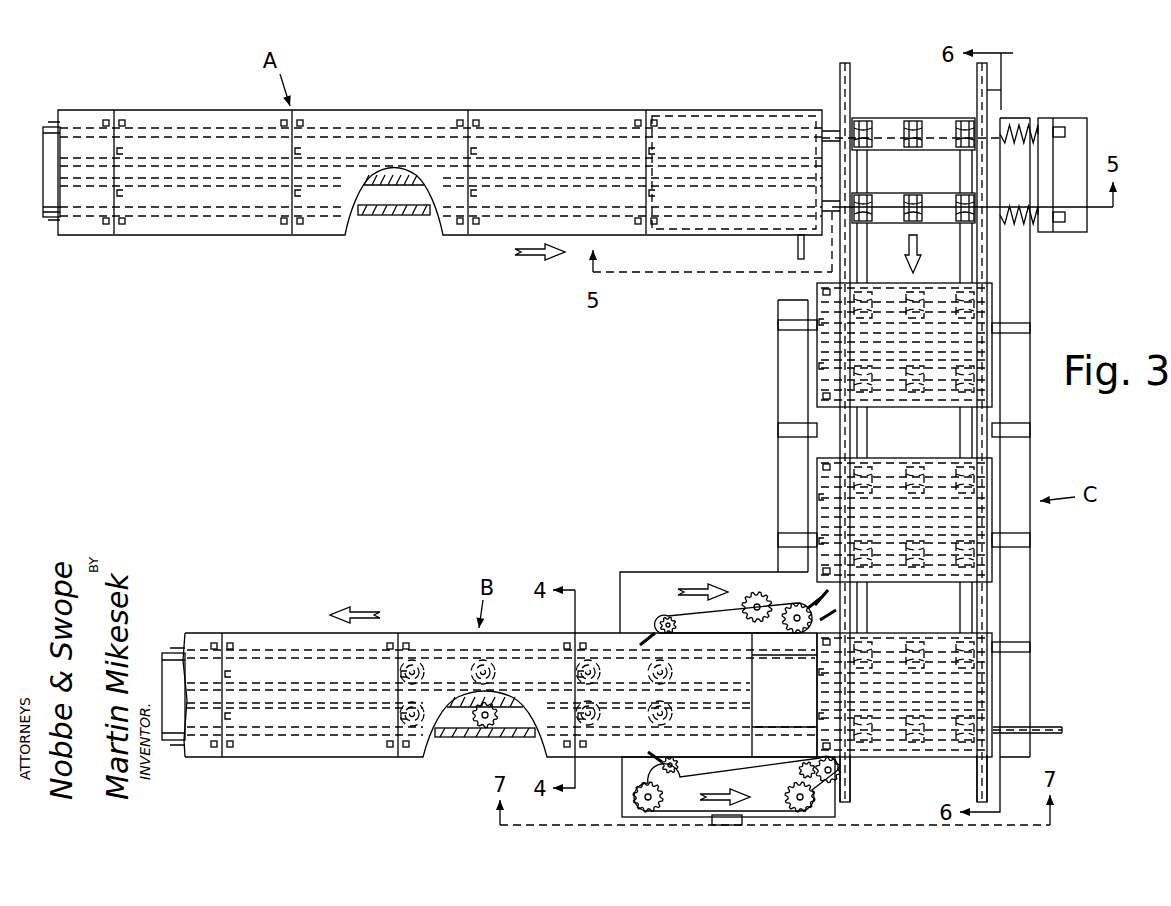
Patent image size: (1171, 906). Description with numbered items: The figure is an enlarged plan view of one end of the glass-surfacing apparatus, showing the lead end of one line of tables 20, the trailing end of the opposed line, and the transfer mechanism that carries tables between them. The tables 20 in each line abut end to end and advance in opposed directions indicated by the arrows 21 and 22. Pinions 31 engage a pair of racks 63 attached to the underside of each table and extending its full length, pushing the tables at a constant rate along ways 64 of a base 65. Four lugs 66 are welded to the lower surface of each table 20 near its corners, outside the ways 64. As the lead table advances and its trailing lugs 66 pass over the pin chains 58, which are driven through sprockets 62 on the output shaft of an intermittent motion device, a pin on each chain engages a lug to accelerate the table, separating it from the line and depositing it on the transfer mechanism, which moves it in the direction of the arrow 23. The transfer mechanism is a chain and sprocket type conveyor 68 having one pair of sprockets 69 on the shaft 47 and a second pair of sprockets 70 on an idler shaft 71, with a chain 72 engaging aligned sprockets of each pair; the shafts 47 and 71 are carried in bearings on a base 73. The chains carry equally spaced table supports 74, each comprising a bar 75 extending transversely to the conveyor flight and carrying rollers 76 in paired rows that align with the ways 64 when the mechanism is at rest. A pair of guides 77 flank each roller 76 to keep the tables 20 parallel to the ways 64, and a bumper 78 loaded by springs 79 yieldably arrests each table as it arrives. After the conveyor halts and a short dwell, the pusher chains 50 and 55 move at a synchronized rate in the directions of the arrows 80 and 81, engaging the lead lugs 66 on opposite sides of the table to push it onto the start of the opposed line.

The table 20 is at (196, 238).
The arrow 21 is at (548, 258).
The arrow 22 is at (352, 610).
The arrow 23 is at (930, 254).
The pinion 31 is at (478, 728).
The shaft 47 is at (1043, 724).
The pusher chain 50 is at (740, 598).
The pusher chain 55 is at (655, 760).
The pin chain 58 is at (745, 108).
The sprocket 62 is at (798, 242).
The rack 63 is at (410, 160).
The way 64 is at (57, 124).
The base 65 is at (55, 175).
The lug 66 is at (300, 226).
The chain and sprocket type conveyor 68 is at (992, 90).
The sprocket 69 is at (851, 785).
The sprocket 70 is at (840, 66).
The idler shaft 71 is at (838, 130).
The chain 72 is at (985, 418).
The base 73 is at (1031, 528).
The table support 74 is at (877, 116).
The bar 75 is at (945, 124).
The roller 76 is at (913, 122).
The guide 77 is at (915, 196).
The bumper 78 is at (1090, 112).
The spring 79 is at (1020, 125).
The arrow 80 is at (712, 588).
The arrow 81 is at (722, 795).